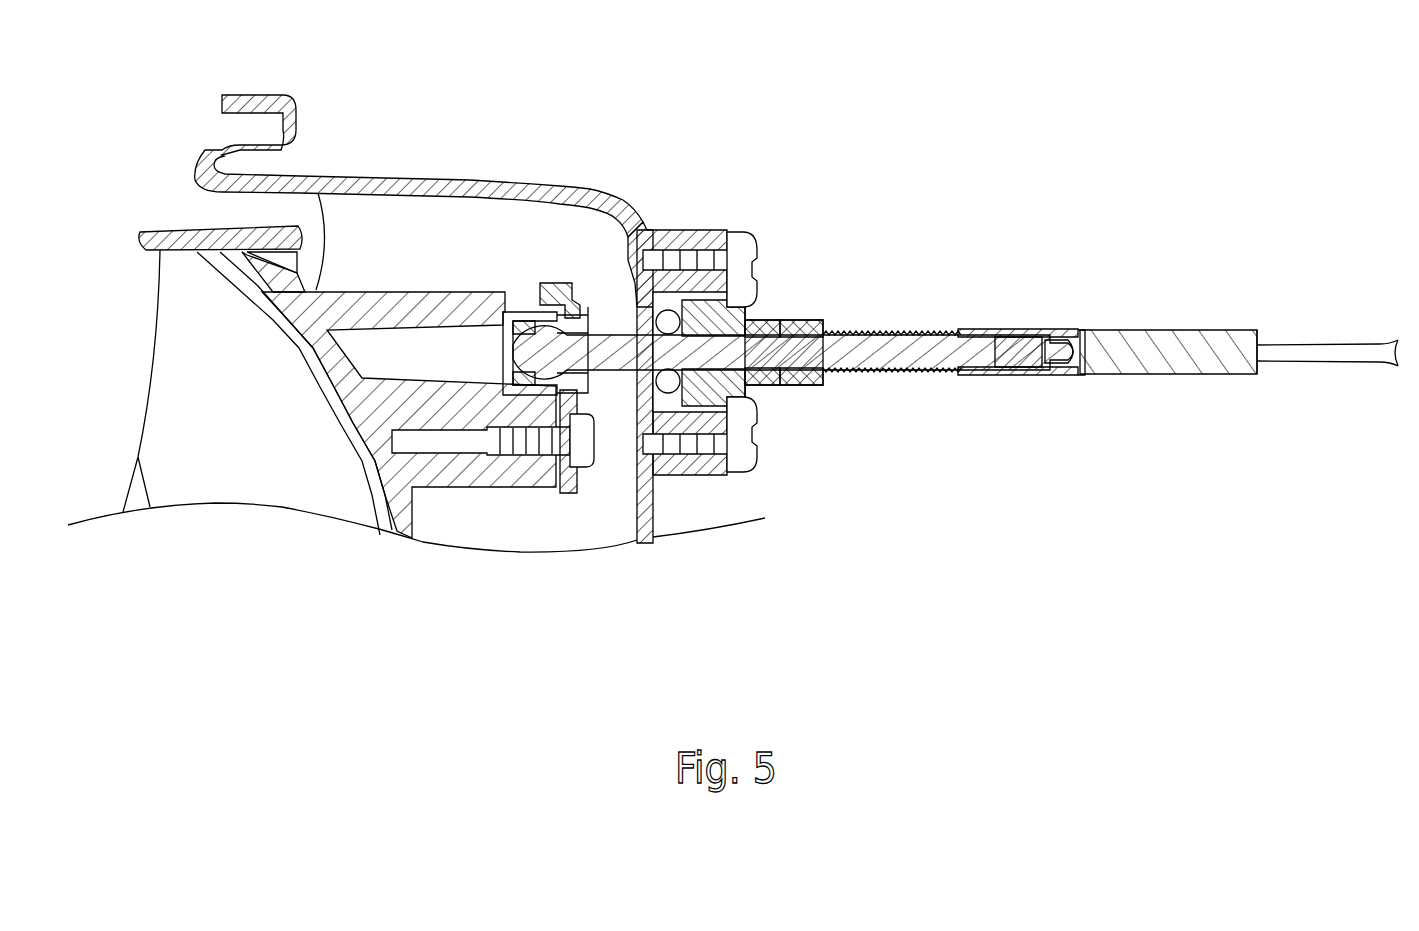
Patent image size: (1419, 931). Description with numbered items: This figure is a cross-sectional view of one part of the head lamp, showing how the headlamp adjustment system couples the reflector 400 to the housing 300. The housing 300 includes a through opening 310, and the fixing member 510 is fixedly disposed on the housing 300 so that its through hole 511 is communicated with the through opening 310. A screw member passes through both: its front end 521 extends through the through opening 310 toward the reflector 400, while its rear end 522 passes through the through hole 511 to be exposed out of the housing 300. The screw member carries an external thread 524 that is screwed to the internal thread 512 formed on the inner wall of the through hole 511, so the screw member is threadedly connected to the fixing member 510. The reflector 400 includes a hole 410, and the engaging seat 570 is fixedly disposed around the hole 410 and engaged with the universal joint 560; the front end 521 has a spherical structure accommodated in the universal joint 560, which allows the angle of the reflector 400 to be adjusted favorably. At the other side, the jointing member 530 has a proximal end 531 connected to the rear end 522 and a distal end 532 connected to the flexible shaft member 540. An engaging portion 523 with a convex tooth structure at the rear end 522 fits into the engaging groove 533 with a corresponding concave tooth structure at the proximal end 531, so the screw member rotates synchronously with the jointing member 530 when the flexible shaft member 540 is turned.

The housing 300 is at (503, 190).
The through opening 310 is at (655, 470).
The reflector 400 is at (403, 310).
The hole 410 is at (517, 305).
The fixing member 510 is at (735, 310).
The through hole 511 is at (752, 387).
The internal thread 512 is at (805, 387).
The front end 521 is at (548, 357).
The rear end 522 is at (1068, 340).
The engaging portion 523 is at (1040, 340).
The external thread 524 is at (918, 333).
The jointing member 530 is at (1133, 357).
The proximal end 531 is at (944, 377).
The distal end 532 is at (1260, 374).
The engaging groove 533 is at (1080, 330).
The flexible shaft member 540 is at (1300, 352).
The universal joint 560 is at (593, 300).
The engaging seat 570 is at (552, 285).